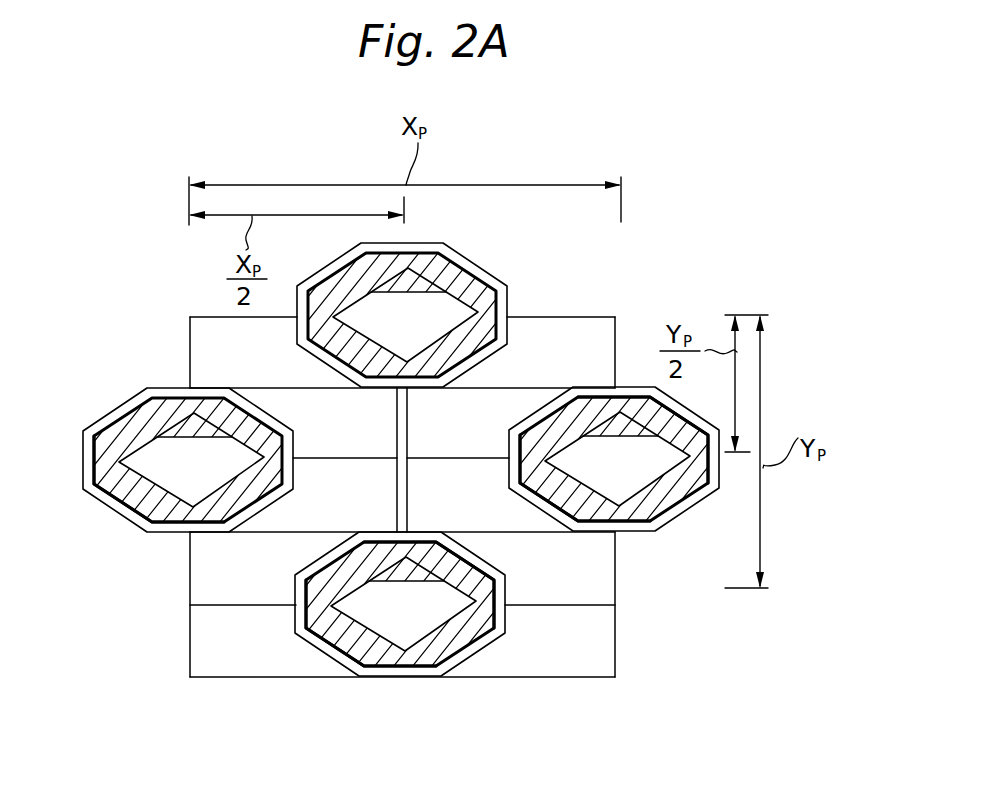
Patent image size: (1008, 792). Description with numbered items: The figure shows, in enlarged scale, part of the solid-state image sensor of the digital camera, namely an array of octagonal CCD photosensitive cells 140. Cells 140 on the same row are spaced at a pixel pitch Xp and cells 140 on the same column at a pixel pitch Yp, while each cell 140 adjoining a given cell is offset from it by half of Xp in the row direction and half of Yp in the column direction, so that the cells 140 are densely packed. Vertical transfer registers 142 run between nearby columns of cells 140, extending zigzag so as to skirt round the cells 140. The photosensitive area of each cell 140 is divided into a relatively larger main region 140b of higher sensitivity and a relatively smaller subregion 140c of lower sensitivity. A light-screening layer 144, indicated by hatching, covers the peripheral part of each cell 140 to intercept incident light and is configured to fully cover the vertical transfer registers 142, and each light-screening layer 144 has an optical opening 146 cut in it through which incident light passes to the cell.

The photosensitive cell 140 is at (489, 268).
The main region 140b is at (366, 600).
The subregion 140c is at (618, 430).
The vertical transfer register 142 is at (577, 333).
The light-screening layer 144 is at (452, 280).
The optical opening 146 is at (214, 430).